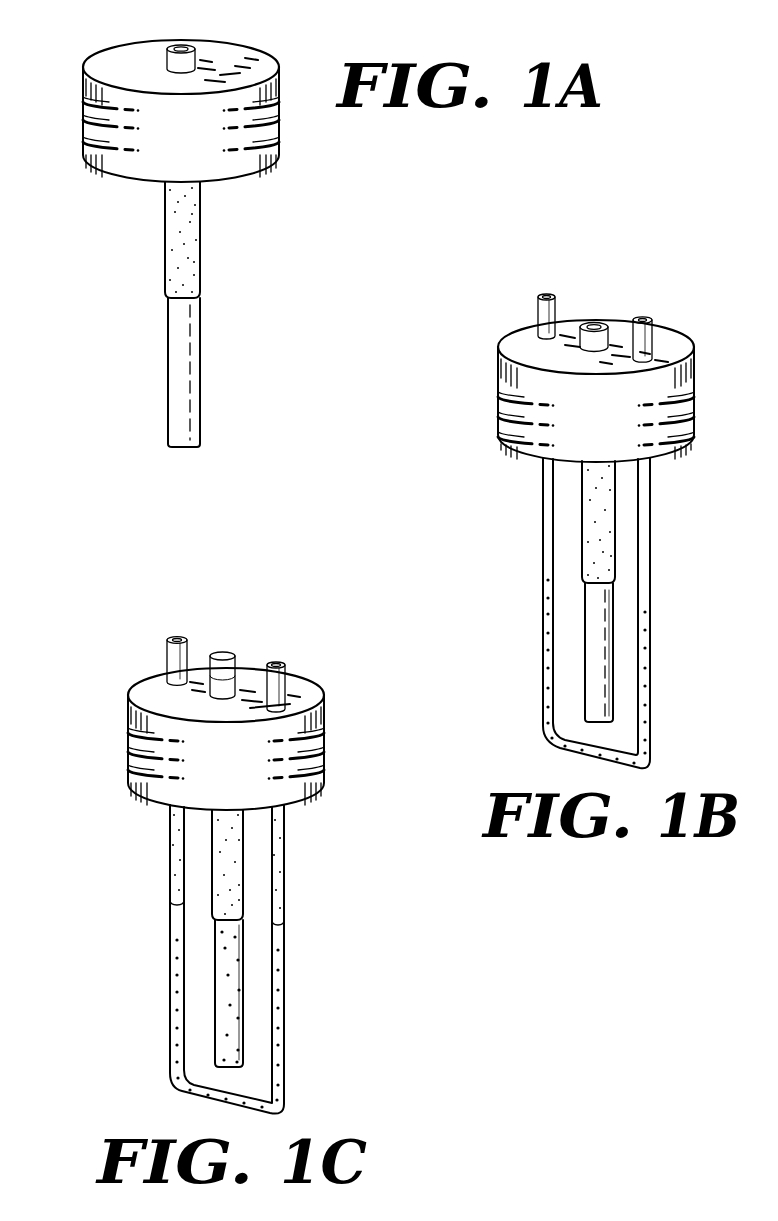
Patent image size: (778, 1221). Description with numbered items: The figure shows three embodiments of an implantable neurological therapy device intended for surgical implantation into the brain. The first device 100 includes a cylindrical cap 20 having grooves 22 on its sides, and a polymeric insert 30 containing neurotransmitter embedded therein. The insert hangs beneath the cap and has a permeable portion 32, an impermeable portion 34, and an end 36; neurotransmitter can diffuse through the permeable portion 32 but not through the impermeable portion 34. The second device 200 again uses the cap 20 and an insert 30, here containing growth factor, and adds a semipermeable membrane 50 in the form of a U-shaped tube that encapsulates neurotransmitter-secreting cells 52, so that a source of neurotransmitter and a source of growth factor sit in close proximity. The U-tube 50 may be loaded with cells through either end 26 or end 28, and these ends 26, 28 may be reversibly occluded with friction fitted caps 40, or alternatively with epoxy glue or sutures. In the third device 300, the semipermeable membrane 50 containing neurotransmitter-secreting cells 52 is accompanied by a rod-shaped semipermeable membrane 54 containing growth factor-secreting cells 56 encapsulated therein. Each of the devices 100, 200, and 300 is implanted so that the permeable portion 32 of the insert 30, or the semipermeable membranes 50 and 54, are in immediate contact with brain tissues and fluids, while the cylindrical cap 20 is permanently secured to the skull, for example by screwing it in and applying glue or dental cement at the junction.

In FIG. 1A, the device 100 is at (117, 36).
In FIG. 1B, the device 200 is at (603, 268).
In FIG. 1C, the device 300 is at (120, 677).
In FIG. 1A, the cylindrical cap 20 is at (273, 47).
In FIG. 1B, the cylindrical cap 20 is at (701, 370).
In FIG. 1C, the cylindrical cap 20 is at (332, 717).
In FIG. 1A, the grooves 22 is at (78, 128).
In FIG. 1B, the end 26 is at (537, 323).
In FIG. 1C, the end 26 is at (165, 655).
In FIG. 1B, the end 28 is at (656, 342).
In FIG. 1C, the end 28 is at (288, 672).
In FIG. 1A, the polymeric insert 30 is at (196, 60).
In FIG. 1B, the polymeric insert 30 is at (608, 340).
In FIG. 1A, the permeable portion 32 is at (201, 375).
In FIG. 1B, the permeable portion 32 is at (589, 643).
In FIG. 1C, the permeable portion 32 is at (215, 990).
In FIG. 1A, the impermeable portion 34 is at (201, 233).
In FIG. 1B, the impermeable portion 34 is at (584, 525).
In FIG. 1C, the impermeable portion 34 is at (244, 880).
In FIG. 1A, the end 36 is at (181, 38).
In FIG. 1B, the friction fitted caps 40 is at (545, 294).
In FIG. 1C, the friction fitted caps 40 is at (218, 654).
In FIG. 1B, the semipermeable membrane 50 is at (651, 515).
In FIG. 1C, the semipermeable membrane 50 is at (284, 952).
In FIG. 1B, the neurotransmitter-secreting cells 52 is at (655, 624).
In FIG. 1C, the neurotransmitter-secreting cells 52 is at (286, 985).
In FIG. 1C, the rod-shaped semipermeable membrane 54 is at (238, 692).
In FIG. 1C, the growth factor-secreting cells 56 is at (220, 962).